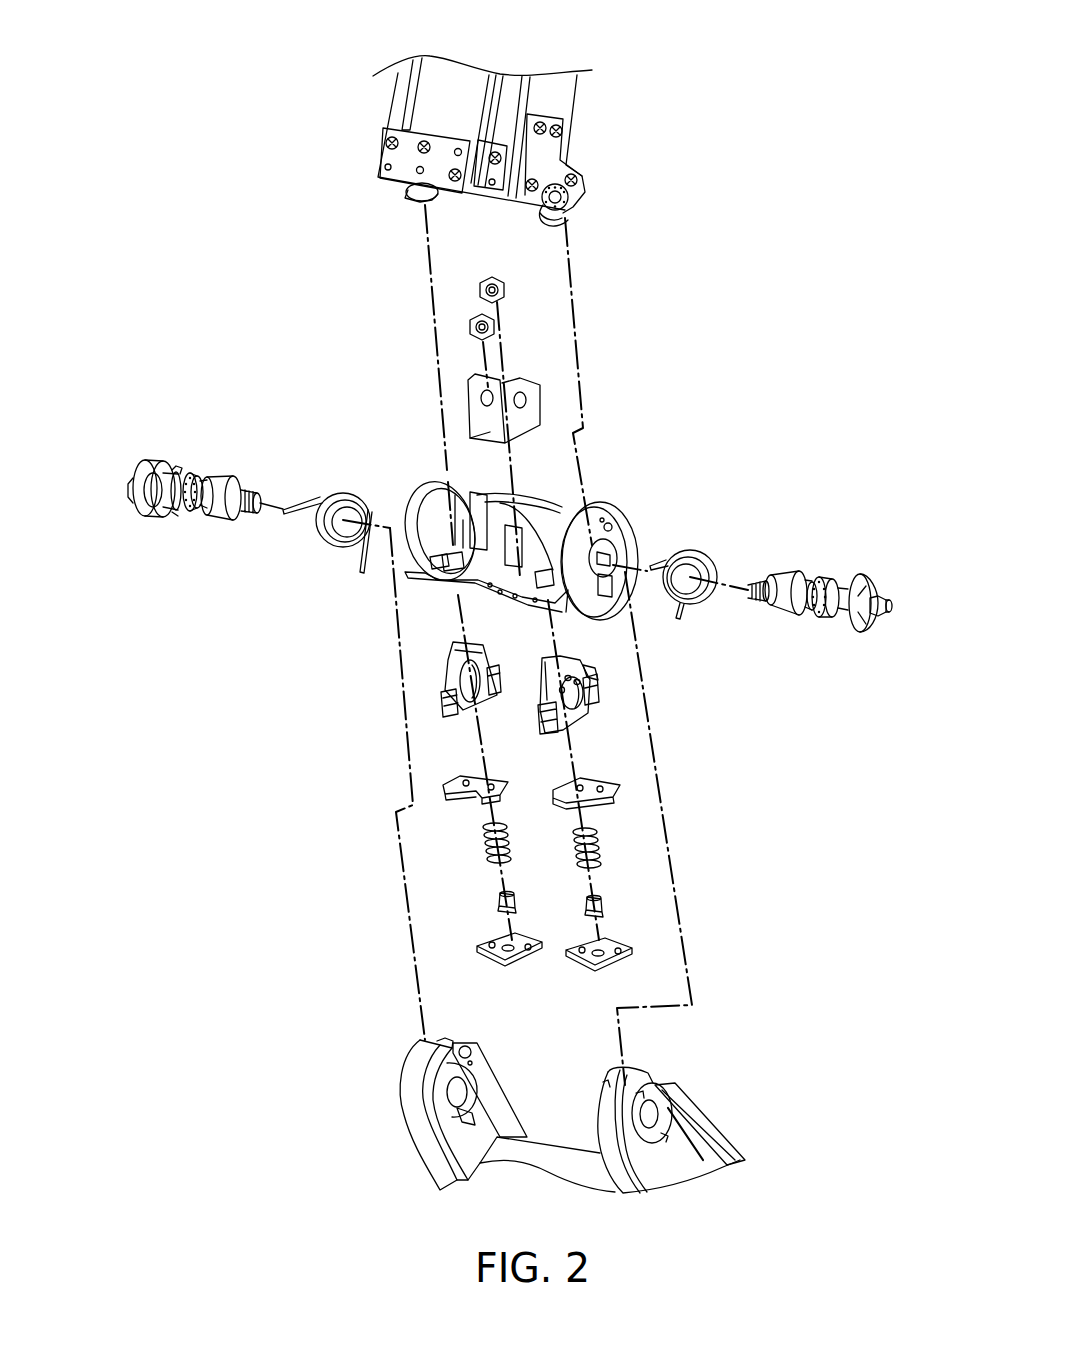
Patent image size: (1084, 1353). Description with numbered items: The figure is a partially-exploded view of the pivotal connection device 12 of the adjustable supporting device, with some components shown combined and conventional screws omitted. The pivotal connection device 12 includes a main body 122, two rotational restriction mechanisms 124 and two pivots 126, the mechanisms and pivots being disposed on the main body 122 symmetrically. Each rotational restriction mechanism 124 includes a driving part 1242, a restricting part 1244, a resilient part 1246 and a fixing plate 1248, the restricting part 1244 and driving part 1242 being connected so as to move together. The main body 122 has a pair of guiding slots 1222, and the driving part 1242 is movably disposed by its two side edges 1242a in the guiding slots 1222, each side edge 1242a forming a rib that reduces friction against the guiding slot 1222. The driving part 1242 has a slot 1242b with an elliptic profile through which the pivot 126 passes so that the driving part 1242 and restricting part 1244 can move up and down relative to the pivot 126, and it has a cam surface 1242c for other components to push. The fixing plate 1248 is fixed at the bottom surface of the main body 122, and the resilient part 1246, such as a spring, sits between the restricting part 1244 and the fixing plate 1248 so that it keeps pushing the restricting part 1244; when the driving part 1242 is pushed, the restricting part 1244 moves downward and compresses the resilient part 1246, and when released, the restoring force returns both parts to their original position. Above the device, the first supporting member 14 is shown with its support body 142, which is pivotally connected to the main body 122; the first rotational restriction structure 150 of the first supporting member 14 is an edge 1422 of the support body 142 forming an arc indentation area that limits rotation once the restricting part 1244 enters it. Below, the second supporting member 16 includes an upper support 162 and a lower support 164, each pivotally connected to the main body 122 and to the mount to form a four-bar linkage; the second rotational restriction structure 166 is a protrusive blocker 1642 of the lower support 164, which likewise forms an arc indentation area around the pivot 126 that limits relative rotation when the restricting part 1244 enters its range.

The pivotal connection device 12 is at (692, 386).
The first supporting member 14 is at (656, 143).
The second supporting member 16 is at (767, 1050).
The main body 122 is at (628, 537).
The guiding slot 1222 is at (548, 598).
The rotational restriction mechanism 124 is at (298, 722).
The driving part 1242 is at (443, 698).
The side edge 1242a is at (540, 722).
The slot 1242b is at (600, 682).
The cam surface 1242c is at (552, 664).
The restricting part 1244 is at (445, 788).
The resilient part 1246 is at (485, 846).
The fixing plate 1248 is at (480, 945).
The pivot 126 is at (230, 476).
The support body 142 is at (565, 92).
The edge 1422 is at (566, 228).
The first rotational restriction structure 150 is at (545, 228).
The upper support 162 is at (490, 1085).
The lower support 164 is at (413, 1080).
The protrusive blocker 1642 is at (457, 1113).
The second rotational restriction structure 166 is at (450, 1160).